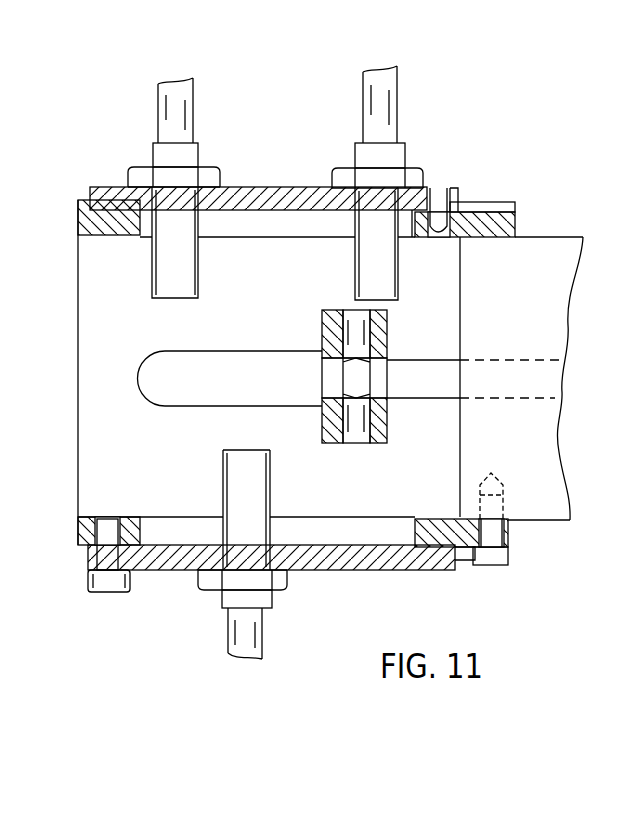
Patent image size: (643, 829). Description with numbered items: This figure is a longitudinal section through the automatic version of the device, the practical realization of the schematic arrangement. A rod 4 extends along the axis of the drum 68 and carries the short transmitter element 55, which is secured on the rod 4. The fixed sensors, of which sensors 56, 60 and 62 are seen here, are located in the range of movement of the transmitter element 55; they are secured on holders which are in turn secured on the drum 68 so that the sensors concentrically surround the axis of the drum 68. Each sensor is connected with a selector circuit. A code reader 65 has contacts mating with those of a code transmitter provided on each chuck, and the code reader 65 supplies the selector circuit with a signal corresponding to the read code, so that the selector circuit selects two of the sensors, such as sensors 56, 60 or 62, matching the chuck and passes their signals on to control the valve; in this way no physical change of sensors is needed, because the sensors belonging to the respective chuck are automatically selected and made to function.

The rod 4 is at (428, 368).
The transmitter element 55 is at (383, 434).
The sensor 56 is at (187, 155).
The sensor 60 is at (390, 155).
The sensor 62 is at (252, 546).
The code reader 65 is at (276, 192).
The drum 68 is at (507, 223).